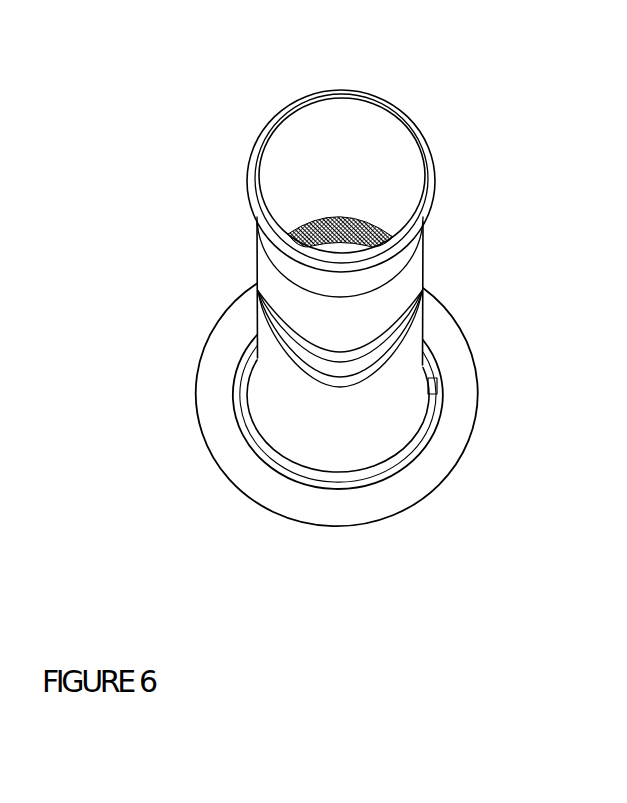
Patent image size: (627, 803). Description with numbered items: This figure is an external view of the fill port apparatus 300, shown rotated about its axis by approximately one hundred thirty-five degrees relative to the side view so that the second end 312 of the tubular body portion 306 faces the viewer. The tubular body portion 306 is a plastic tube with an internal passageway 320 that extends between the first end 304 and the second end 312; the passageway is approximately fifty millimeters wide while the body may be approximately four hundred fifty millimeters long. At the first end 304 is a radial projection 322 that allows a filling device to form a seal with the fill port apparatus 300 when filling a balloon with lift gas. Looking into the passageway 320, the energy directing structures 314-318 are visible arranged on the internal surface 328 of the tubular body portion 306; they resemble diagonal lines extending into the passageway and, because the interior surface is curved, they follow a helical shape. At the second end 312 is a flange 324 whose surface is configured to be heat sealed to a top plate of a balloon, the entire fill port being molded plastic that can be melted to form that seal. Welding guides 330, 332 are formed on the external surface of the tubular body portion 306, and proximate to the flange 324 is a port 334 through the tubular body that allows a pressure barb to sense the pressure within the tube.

The fill port apparatus 300 is at (130, 172).
The first end 304 is at (345, 158).
The tubular body portion 306 is at (258, 268).
The second end 312 is at (330, 553).
The energy directing structures 314-318 is at (380, 218).
The internal passageway 320 is at (340, 211).
The radial projection 322 is at (250, 228).
The flange 324 is at (196, 437).
The internal surface 328 is at (375, 200).
The welding guide 330 is at (420, 314).
The welding guide 332 is at (408, 347).
The port 334 is at (255, 333).